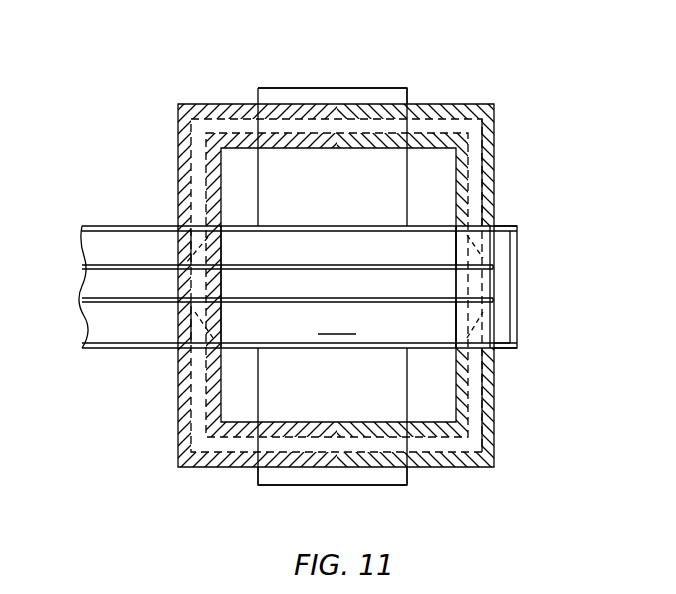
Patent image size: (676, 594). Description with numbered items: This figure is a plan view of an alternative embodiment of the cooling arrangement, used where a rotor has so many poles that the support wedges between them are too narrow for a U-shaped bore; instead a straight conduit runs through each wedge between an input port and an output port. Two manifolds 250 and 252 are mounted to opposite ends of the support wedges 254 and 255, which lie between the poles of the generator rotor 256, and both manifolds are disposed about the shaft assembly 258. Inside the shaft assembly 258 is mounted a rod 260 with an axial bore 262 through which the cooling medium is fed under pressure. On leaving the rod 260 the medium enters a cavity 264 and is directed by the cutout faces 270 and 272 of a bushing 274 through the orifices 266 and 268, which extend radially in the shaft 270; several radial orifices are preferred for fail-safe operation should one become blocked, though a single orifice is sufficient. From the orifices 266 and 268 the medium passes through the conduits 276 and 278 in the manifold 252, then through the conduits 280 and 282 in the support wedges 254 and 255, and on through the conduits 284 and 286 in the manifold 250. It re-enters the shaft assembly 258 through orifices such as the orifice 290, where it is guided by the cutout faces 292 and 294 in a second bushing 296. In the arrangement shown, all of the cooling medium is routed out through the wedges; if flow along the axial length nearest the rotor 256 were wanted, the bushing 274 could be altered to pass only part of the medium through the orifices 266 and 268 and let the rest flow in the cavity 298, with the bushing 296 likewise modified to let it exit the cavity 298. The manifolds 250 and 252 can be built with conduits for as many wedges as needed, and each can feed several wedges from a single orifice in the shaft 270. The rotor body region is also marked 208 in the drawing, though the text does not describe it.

The electronic device 208 is at (338, 285).
The manifold 250 is at (199, 103).
The manifold 252 is at (443, 103).
The support wedge 254 is at (383, 103).
The support wedge 255 is at (387, 480).
The generator rotor 256 is at (274, 89).
The shaft assembly 258 is at (517, 276).
The rod 260 is at (96, 308).
The axial bore 262 is at (95, 283).
The cavity 264 is at (506, 333).
The orifice 266 is at (478, 249).
The orifice 268 is at (487, 348).
The shaft 270 is at (88, 225).
The cutout face 272 is at (490, 332).
The bushing 274 is at (457, 243).
The conduit 276 is at (502, 122).
The conduit 278 is at (500, 430).
The conduit 280 is at (320, 126).
The conduit 282 is at (346, 480).
The conduit 284 is at (180, 145).
The conduit 286 is at (180, 422).
The orifice 290 is at (192, 360).
The cutout face 292 is at (187, 242).
The cutout face 294 is at (180, 350).
The bushing 296 is at (227, 278).
The cavity 298 is at (192, 232).